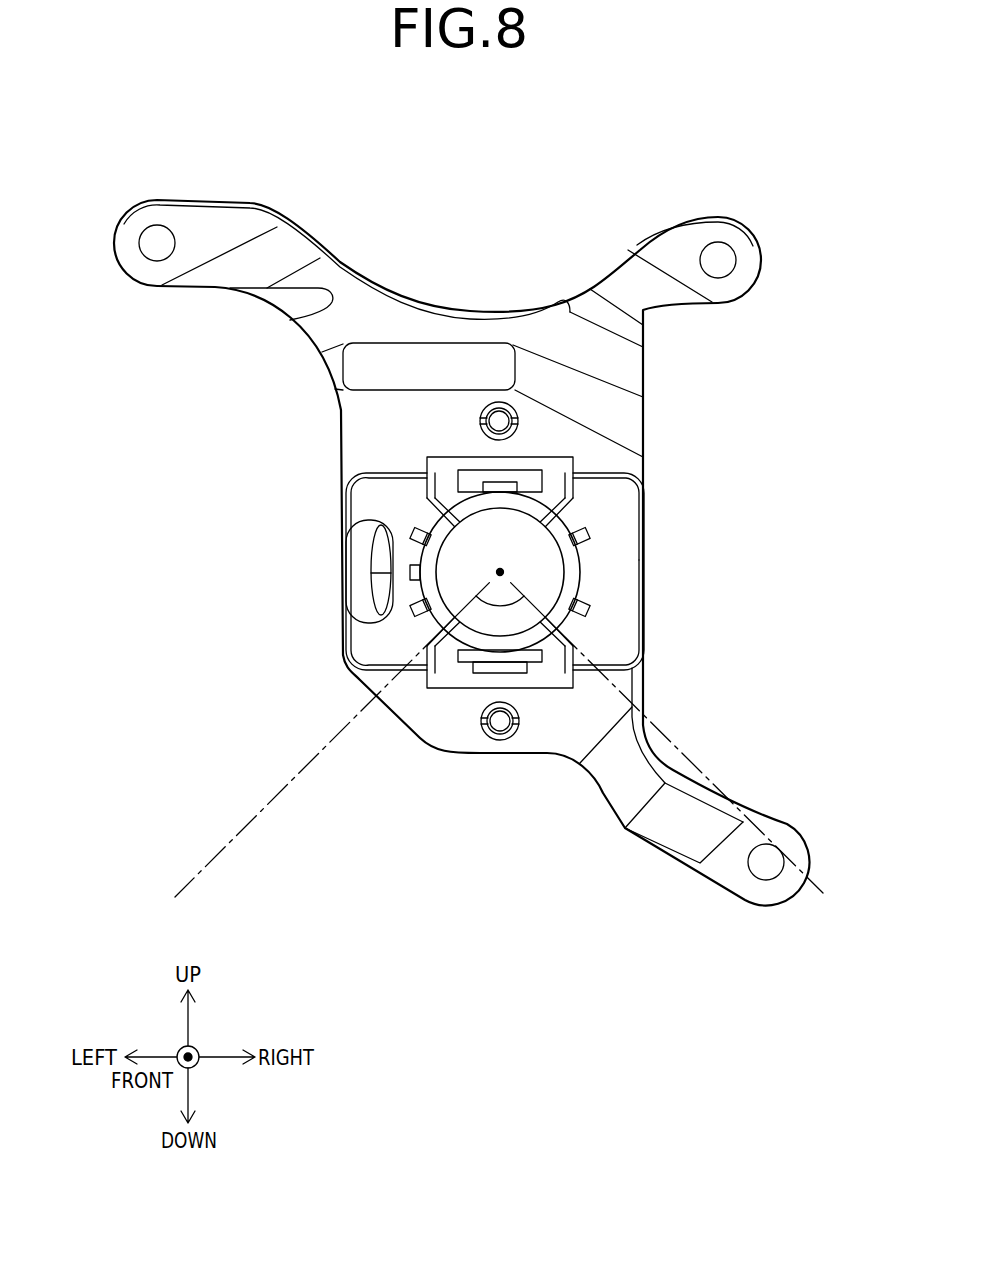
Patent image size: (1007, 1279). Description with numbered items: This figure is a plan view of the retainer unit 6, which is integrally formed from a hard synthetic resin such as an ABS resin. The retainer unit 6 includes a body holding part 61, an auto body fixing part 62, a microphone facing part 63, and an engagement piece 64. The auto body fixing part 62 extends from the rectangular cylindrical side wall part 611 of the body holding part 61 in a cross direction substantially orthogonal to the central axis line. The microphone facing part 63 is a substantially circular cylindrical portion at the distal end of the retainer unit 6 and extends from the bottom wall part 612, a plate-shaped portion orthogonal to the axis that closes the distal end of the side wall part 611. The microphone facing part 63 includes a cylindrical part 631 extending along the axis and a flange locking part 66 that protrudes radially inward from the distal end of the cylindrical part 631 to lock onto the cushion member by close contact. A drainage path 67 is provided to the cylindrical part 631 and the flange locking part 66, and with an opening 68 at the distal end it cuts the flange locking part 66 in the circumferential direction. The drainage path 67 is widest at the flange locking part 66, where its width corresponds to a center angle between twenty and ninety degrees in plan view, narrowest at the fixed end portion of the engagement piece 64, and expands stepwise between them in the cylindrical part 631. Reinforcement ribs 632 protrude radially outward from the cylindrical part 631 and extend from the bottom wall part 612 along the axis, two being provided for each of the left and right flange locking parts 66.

The retainer unit 6 is at (466, 182).
The body holding part 61 is at (650, 479).
The rectangular cylindrical side wall part 611 is at (600, 474).
The bottom wall part 612 is at (623, 560).
The auto body fixing part 62 is at (190, 225).
The microphone facing part 63 is at (378, 555).
The cylindrical part 631 is at (620, 592).
The reinforcement rib 632 is at (404, 528).
The engagement piece 64 is at (463, 675).
The flange locking part 66 is at (447, 624).
The drainage path 67 is at (502, 505).
The opening 68 is at (477, 505).